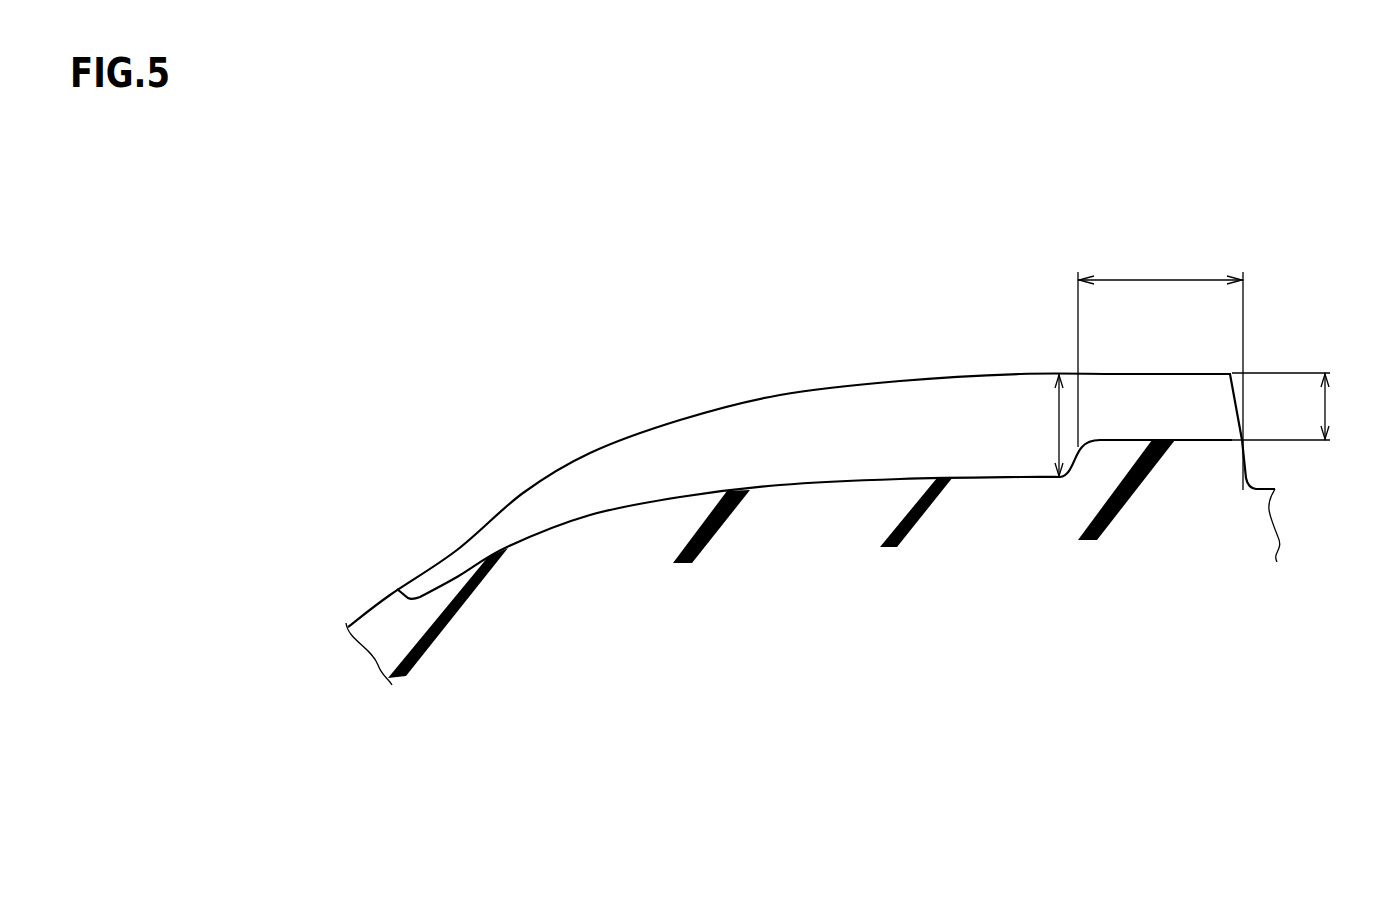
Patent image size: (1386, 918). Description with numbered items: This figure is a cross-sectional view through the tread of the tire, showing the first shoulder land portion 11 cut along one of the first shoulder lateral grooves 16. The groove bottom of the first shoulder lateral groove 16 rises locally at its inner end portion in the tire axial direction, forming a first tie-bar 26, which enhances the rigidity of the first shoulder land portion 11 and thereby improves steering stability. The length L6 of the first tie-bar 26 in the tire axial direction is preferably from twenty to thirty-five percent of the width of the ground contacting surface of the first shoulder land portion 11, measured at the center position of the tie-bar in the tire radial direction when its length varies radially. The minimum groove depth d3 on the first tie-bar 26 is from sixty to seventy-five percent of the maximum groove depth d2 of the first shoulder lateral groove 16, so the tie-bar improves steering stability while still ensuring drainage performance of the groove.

The first shoulder land portion 11 is at (932, 377).
The first shoulder lateral groove 16 is at (863, 438).
The first tie-bar 26 is at (1143, 437).
The maximum groove depth d2 is at (1057, 425).
The minimum groove depth d3 is at (1299, 406).
The length in the tire axial direction L6 is at (1160, 367).